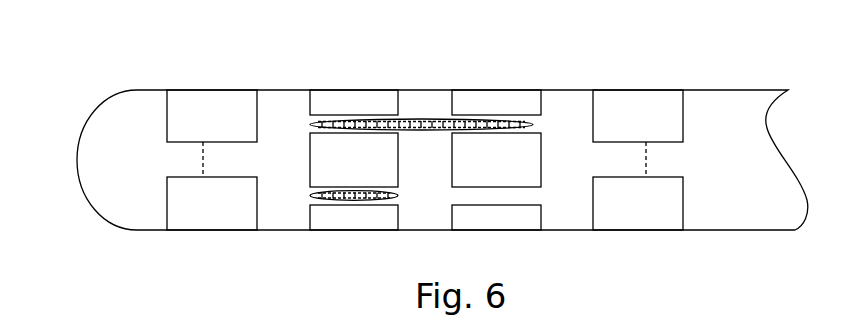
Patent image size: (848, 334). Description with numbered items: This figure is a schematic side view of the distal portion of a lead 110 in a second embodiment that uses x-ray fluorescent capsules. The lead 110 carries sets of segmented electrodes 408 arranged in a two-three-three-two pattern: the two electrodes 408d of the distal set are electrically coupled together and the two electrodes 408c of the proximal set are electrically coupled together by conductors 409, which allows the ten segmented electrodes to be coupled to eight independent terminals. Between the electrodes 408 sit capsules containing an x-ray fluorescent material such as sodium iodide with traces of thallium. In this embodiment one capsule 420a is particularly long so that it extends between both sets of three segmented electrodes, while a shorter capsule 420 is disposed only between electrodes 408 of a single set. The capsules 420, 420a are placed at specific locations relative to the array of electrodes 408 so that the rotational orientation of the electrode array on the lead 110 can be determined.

The lead 110 is at (733, 99).
The segmented electrodes 408 is at (352, 100).
The electrodes 408c is at (628, 108).
The electrodes 408d is at (210, 100).
The conductors 409 is at (202, 161).
The capsule 420 is at (312, 194).
The capsule 420a is at (402, 124).